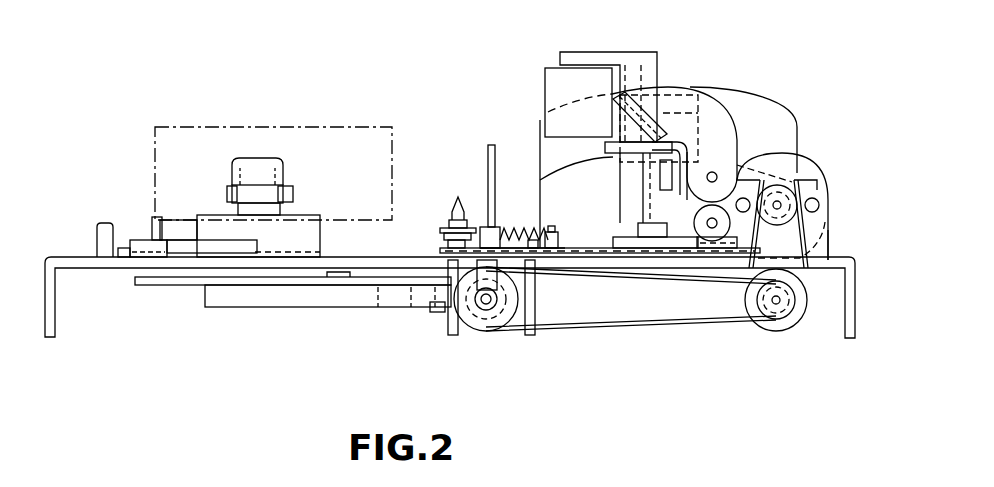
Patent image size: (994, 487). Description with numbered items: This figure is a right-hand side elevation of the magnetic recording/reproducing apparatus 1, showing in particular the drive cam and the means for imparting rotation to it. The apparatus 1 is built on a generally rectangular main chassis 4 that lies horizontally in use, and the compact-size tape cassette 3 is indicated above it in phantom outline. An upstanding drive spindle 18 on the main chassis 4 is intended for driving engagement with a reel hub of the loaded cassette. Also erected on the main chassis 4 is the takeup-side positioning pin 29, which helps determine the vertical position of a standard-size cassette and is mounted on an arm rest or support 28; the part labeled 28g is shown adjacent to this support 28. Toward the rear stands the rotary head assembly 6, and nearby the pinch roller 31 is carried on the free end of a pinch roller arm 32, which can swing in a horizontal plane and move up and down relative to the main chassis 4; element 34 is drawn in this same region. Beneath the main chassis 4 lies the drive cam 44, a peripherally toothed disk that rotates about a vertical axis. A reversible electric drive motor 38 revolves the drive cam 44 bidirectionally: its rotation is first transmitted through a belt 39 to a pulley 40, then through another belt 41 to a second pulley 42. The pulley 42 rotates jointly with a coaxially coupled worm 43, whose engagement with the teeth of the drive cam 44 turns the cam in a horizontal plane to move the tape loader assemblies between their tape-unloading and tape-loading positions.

The magnetic recording/reproducing apparatus 1 is at (270, 63).
The compact-size tape cassette 3 is at (270, 127).
The main chassis 4 is at (70, 257).
The rotary head assembly 6 is at (755, 100).
The drive spindle 18 is at (283, 170).
The arm rest 28 is at (440, 230).
The guide rod 28g is at (488, 150).
The takeup-side positioning pin 29 is at (459, 196).
The pinch roller 31 is at (548, 95).
The pinch roller arm 32 is at (600, 52).
The plate 34 is at (690, 87).
The drive motor 38 is at (805, 165).
The belt 39 is at (825, 252).
The pulley 40 is at (793, 328).
The belt 41 is at (690, 318).
The pulley 42 is at (497, 330).
The worm 43 is at (435, 308).
The drive cam 44 is at (310, 305).